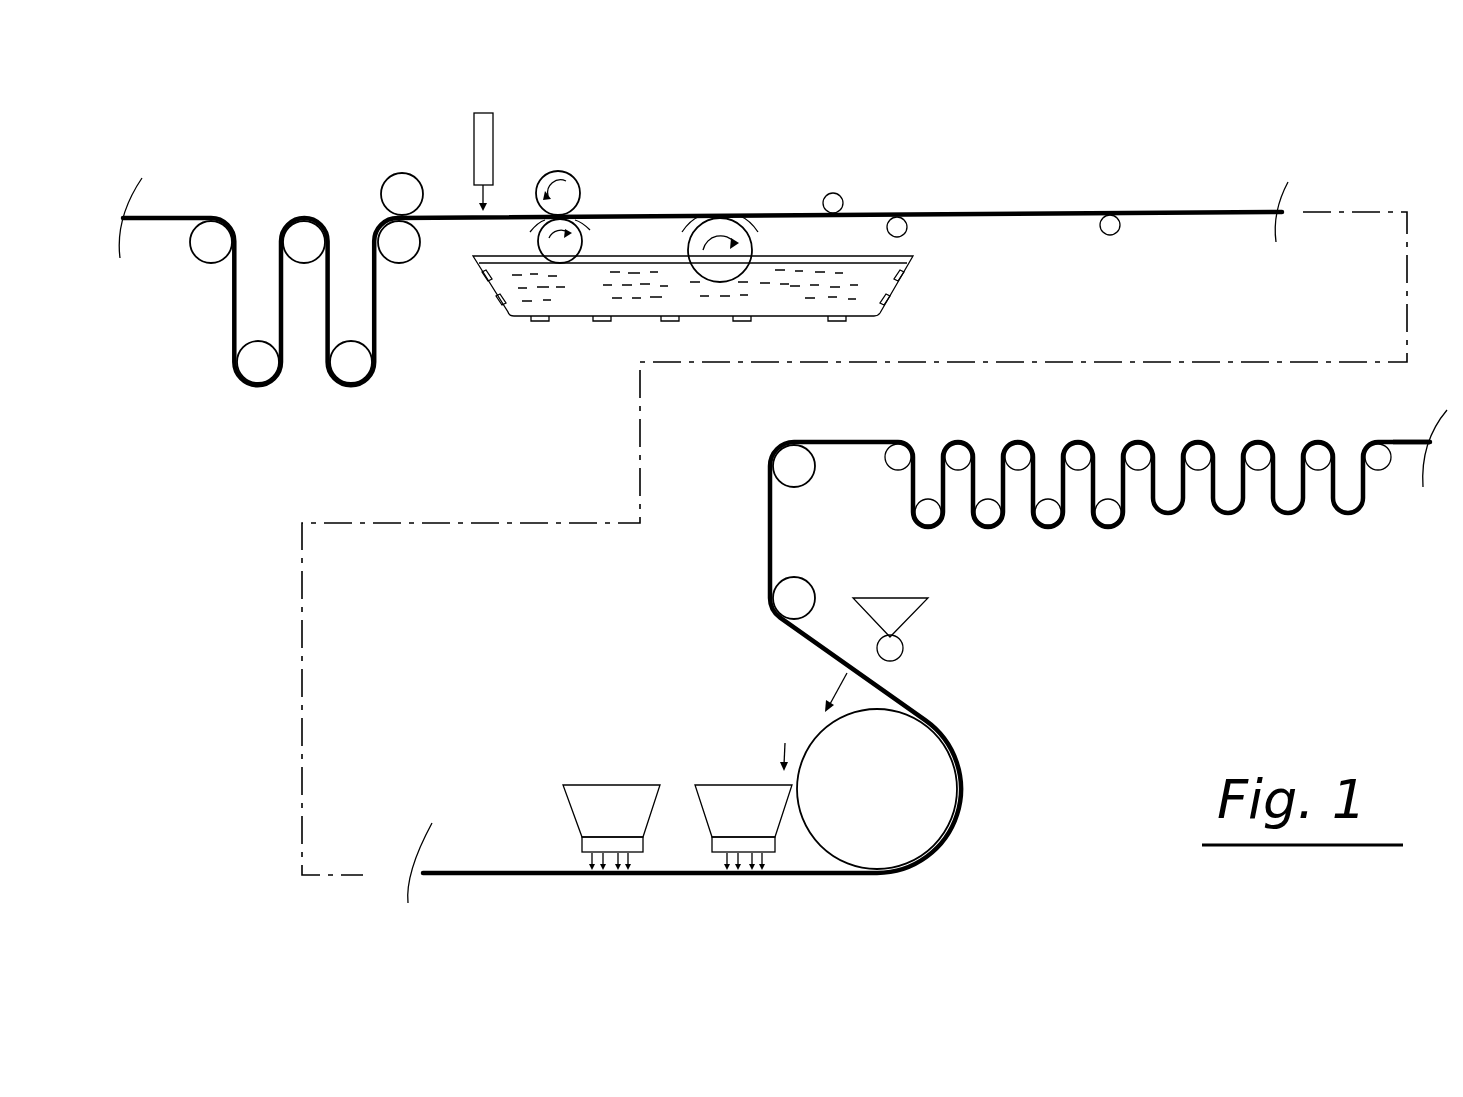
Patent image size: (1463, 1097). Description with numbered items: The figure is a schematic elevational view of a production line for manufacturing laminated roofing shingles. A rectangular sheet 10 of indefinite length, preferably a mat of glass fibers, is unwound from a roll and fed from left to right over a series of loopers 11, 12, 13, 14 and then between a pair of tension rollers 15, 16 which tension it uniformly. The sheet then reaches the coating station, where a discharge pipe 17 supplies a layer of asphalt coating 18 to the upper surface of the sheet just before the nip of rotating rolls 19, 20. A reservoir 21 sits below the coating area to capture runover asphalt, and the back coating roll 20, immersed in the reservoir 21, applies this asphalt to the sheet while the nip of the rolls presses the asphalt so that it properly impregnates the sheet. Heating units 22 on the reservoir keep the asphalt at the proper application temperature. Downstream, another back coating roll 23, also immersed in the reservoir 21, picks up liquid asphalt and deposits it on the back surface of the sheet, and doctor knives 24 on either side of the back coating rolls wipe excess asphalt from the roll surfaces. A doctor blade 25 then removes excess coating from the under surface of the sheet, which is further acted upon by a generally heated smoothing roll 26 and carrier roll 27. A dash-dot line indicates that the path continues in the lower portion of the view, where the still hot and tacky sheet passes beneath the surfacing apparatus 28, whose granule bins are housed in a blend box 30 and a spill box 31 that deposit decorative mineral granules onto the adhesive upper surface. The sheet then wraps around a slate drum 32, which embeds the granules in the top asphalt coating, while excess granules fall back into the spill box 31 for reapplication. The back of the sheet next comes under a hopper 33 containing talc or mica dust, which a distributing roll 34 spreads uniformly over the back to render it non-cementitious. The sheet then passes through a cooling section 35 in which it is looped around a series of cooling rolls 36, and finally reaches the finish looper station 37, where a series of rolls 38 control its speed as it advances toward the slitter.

The sheet 10 is at (160, 216).
The looper 11 is at (204, 254).
The looper 12 is at (262, 372).
The looper 13 is at (312, 228).
The looper 14 is at (368, 360).
The tension roller 15 is at (403, 172).
The tension roller 16 is at (423, 241).
The discharge pipe 17 is at (493, 128).
The asphalt coating 18 is at (488, 200).
The nip roll 19 is at (578, 178).
The back coating roll 20 is at (565, 240).
The reservoir 21 is at (479, 263).
The heating unit 22 is at (482, 288).
The back coating roll 23 is at (723, 212).
The doctor knife 24 is at (588, 222).
The doctor blade 25 is at (908, 228).
The smoothing roll 26 is at (840, 193).
The carrier roll 27 is at (1115, 234).
The surfacing apparatus 28 is at (652, 776).
The blend box 30 is at (573, 785).
The spill box 31 is at (739, 806).
The slate drum 32 is at (935, 787).
The hopper 33 is at (908, 600).
The distributing roll 34 is at (905, 650).
The cooling section 35 is at (903, 413).
The cooling roll 36 is at (1077, 456).
The finish looper station 37 is at (1360, 404).
The roll 38 is at (1373, 442).